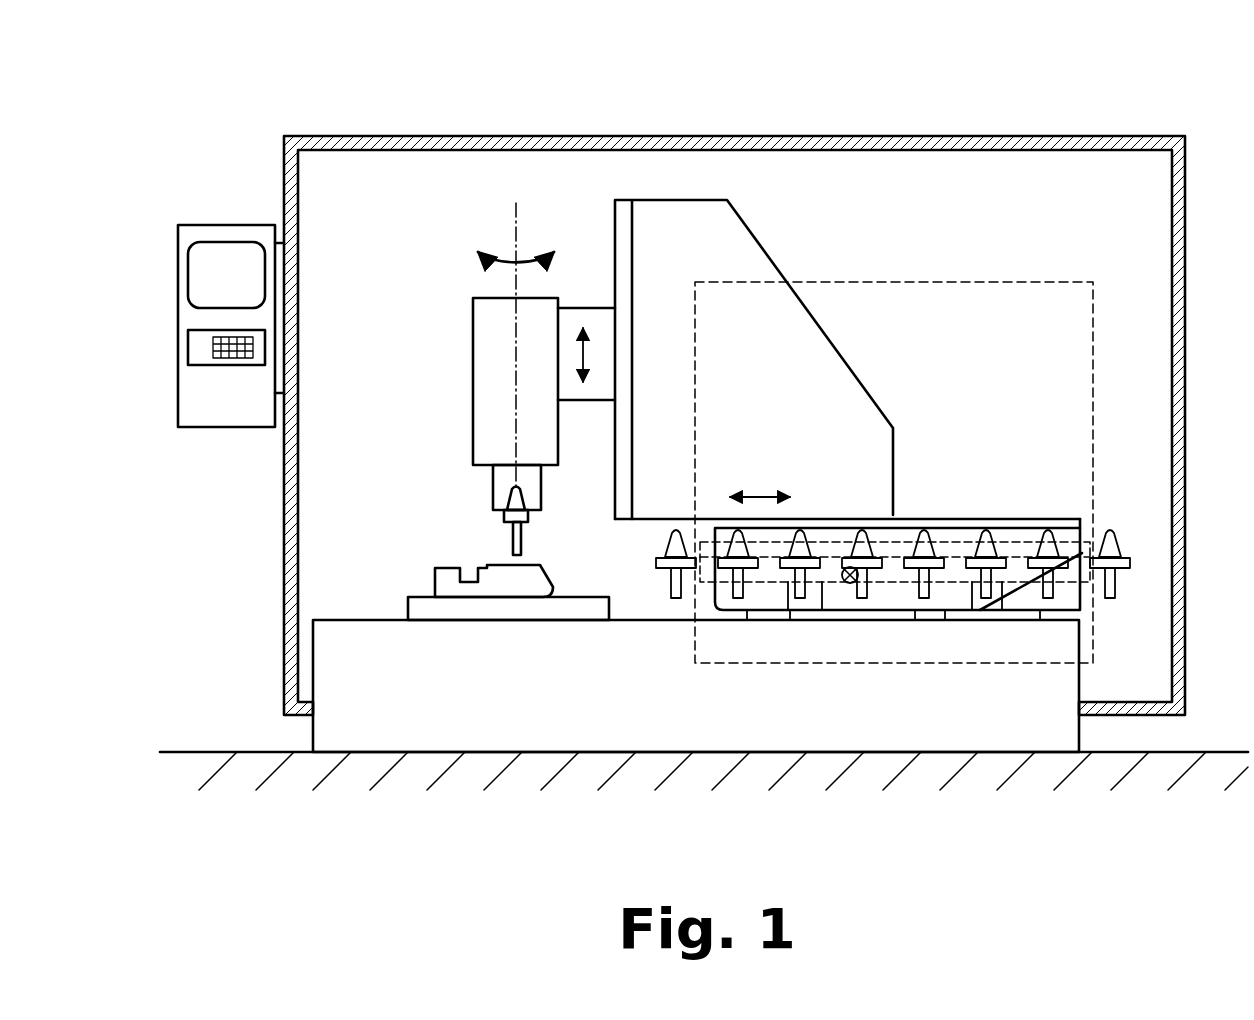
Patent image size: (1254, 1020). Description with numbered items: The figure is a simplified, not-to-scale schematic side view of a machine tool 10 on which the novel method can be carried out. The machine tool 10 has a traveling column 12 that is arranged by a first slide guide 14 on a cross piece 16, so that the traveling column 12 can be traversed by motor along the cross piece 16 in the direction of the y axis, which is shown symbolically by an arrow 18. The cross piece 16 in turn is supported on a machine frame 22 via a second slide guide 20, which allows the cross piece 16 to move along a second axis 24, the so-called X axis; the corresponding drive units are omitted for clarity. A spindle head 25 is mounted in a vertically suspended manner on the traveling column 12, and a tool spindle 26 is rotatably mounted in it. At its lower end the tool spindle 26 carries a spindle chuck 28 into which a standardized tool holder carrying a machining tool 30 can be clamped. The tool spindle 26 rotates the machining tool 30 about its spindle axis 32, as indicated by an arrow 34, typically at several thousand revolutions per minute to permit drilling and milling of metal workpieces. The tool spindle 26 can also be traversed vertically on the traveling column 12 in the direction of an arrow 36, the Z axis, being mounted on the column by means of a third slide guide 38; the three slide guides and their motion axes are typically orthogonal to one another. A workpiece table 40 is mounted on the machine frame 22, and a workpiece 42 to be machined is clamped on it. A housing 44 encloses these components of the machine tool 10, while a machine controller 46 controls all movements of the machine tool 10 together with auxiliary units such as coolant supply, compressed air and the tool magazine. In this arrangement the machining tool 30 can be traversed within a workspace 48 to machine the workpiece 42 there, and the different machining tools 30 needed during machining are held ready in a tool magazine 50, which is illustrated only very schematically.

The machine tool 10 is at (198, 150).
The traveling column 12 is at (738, 244).
The first slide guide 14 is at (930, 519).
The cross piece 16 is at (882, 590).
The arrow 18 is at (764, 495).
The second slide guide 20 is at (764, 622).
The machine frame 22 is at (594, 718).
The second axis 24 is at (852, 588).
The spindle head 25 is at (473, 340).
The tool spindle 26 is at (505, 475).
The spindle chuck 28 is at (500, 503).
The machining tool 30 is at (510, 540).
The spindle axis 32 is at (515, 208).
The arrow 34 is at (480, 254).
The arrow 36 is at (586, 354).
The third slide guide 38 is at (615, 505).
The workpiece table 40 is at (455, 610).
The workpiece 42 is at (518, 587).
The housing 44 is at (904, 135).
The machine controller 46 is at (178, 384).
The workspace 48 is at (603, 581).
The tool magazine 50 is at (1012, 525).